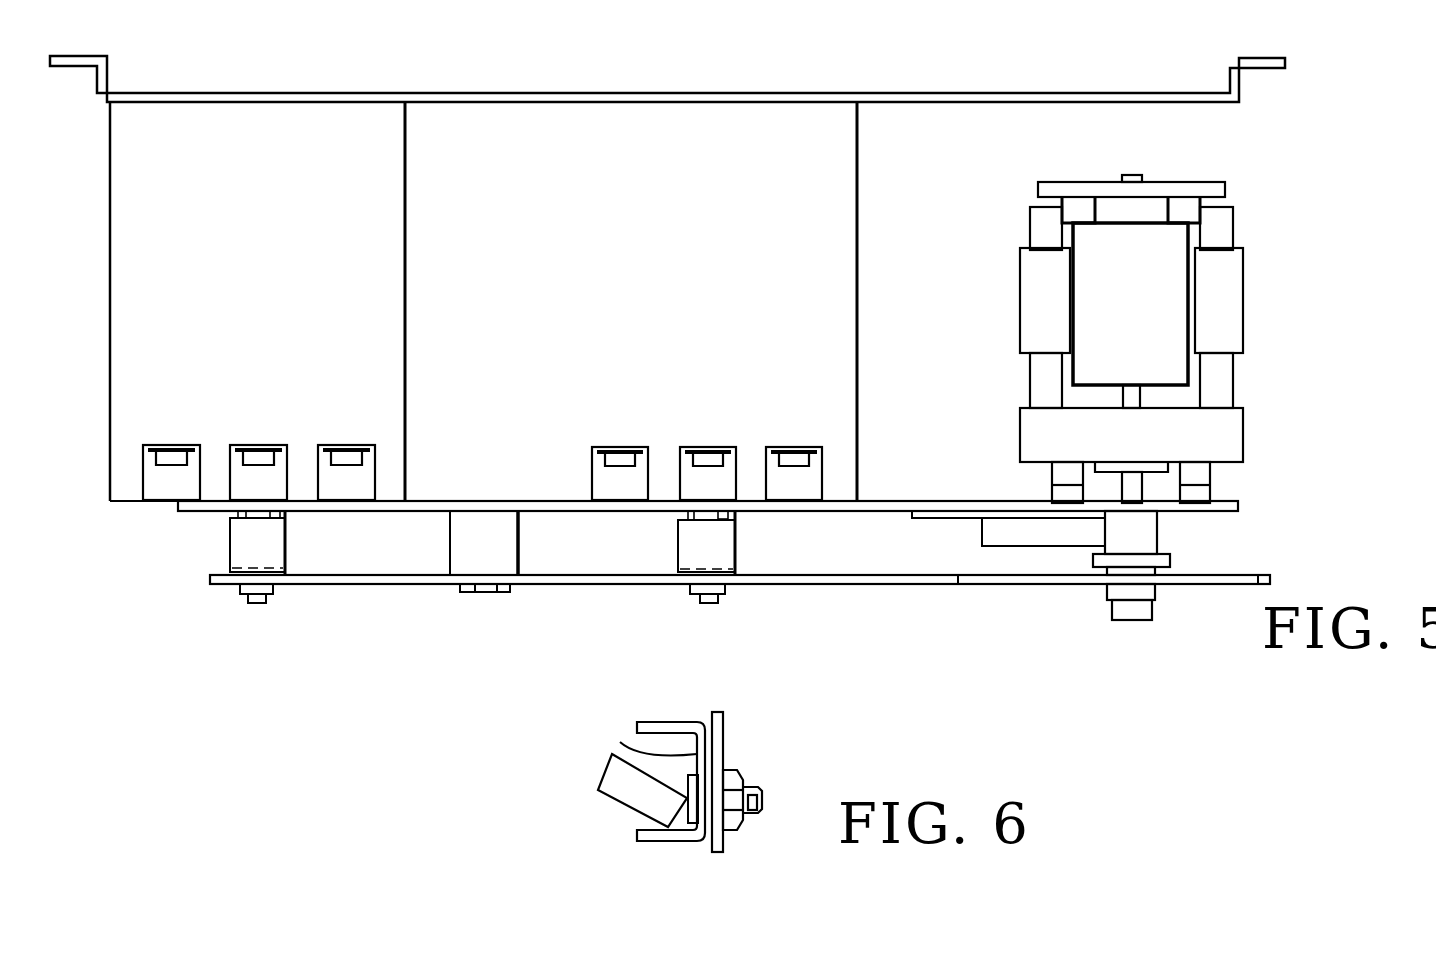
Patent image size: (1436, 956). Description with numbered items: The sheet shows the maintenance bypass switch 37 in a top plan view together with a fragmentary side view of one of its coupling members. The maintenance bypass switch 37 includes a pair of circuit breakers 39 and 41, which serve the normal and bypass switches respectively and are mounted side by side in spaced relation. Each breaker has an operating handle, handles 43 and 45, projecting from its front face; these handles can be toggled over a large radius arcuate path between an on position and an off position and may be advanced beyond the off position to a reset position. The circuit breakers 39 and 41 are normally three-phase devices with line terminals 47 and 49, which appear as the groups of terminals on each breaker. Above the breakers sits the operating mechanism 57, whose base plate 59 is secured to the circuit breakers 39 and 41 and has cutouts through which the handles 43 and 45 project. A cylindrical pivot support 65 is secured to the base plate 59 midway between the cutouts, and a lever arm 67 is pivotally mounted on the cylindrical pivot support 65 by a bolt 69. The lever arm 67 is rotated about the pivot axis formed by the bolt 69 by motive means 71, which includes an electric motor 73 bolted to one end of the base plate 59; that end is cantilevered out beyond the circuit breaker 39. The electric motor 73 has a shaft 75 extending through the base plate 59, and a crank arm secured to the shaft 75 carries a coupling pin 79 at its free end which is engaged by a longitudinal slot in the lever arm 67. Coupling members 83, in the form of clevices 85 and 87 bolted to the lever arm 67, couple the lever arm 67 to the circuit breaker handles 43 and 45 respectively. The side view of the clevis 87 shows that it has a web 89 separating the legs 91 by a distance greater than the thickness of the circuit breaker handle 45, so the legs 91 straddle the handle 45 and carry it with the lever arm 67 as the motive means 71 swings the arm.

In FIG. 5, the maintenance bypass switch 37 is at (696, 278).
In FIG. 5, the circuit breaker 39 is at (878, 301).
In FIG. 5, the circuit breaker 41 is at (436, 301).
In FIG. 5, the operating handle 43 is at (755, 532).
In FIG. 5, the operating handle 45 is at (310, 526).
In FIG. 6, the operating handle 45 is at (631, 806).
In FIG. 5, the line terminals 47 is at (707, 444).
In FIG. 5, the line terminals 49 is at (259, 444).
In FIG. 5, the operating mechanism 57 is at (740, 613).
In FIG. 5, the base plate 59 is at (708, 494).
In FIG. 5, the cylindrical pivot support 65 is at (515, 543).
In FIG. 5, the lever arm 67 is at (562, 600).
In FIG. 6, the lever arm 67 is at (748, 763).
In FIG. 5, the bolt 69 is at (475, 609).
In FIG. 5, the motive means 71 is at (1176, 397).
In FIG. 5, the electric motor 73 is at (1191, 304).
In FIG. 5, the shaft 75 is at (1161, 523).
In FIG. 5, the coupling pin 79 is at (1163, 599).
In FIG. 5, the coupling members 83 is at (216, 557).
In FIG. 5, the clevis 85 is at (682, 557).
In FIG. 5, the clevis 87 is at (307, 543).
In FIG. 6, the clevis 87 is at (699, 779).
In FIG. 6, the web 89 is at (644, 747).
In FIG. 6, the legs 91 is at (671, 775).